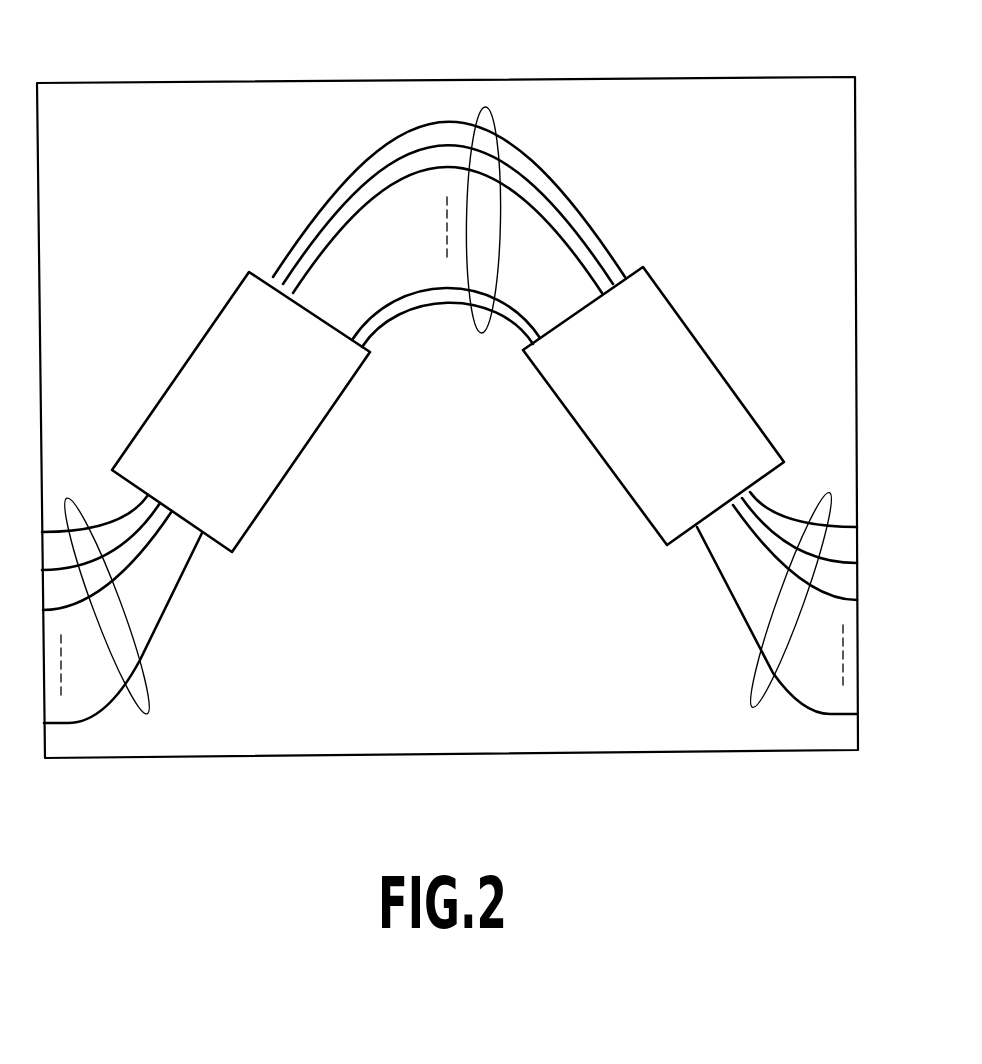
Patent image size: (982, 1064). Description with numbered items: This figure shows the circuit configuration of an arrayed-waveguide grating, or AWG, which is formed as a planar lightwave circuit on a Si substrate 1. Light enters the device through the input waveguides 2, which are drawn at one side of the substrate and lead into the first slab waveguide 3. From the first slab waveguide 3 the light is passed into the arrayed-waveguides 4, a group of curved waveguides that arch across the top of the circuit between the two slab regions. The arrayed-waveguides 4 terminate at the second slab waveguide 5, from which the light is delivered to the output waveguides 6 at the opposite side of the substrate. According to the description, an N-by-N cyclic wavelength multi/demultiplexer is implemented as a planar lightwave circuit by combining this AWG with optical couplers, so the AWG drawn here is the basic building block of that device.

The Si substrate 1 is at (657, 77).
The input waveguides 2 is at (80, 505).
The first slab waveguide 3 is at (197, 343).
The arrayed-waveguides 4 is at (477, 110).
The second slab waveguide 5 is at (703, 343).
The output waveguides 6 is at (825, 490).